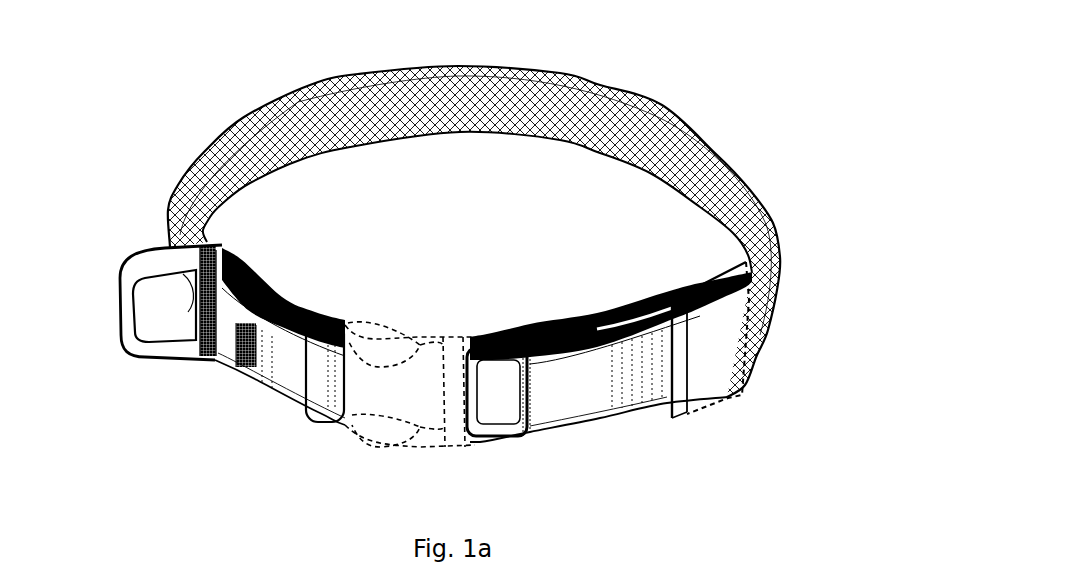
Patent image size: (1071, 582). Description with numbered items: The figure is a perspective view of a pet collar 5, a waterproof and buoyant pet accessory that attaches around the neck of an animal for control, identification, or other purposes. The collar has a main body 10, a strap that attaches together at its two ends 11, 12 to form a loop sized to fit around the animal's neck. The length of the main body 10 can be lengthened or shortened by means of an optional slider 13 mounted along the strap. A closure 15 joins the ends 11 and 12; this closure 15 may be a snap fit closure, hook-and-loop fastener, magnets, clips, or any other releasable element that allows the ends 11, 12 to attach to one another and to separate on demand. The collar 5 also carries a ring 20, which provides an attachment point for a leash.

The collar 5 is at (96, 80).
The main body 10 is at (676, 143).
The end 11 is at (318, 390).
The end 12 is at (503, 413).
The slider 13 is at (718, 400).
The closure 15 is at (392, 387).
The ring 20 is at (128, 279).